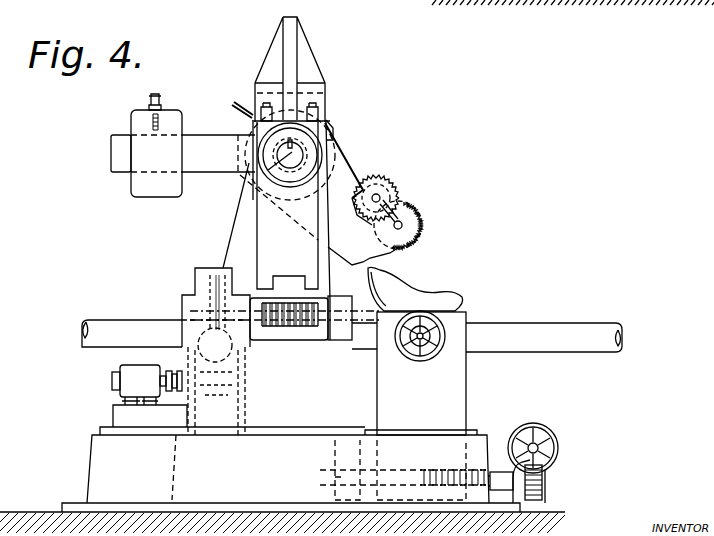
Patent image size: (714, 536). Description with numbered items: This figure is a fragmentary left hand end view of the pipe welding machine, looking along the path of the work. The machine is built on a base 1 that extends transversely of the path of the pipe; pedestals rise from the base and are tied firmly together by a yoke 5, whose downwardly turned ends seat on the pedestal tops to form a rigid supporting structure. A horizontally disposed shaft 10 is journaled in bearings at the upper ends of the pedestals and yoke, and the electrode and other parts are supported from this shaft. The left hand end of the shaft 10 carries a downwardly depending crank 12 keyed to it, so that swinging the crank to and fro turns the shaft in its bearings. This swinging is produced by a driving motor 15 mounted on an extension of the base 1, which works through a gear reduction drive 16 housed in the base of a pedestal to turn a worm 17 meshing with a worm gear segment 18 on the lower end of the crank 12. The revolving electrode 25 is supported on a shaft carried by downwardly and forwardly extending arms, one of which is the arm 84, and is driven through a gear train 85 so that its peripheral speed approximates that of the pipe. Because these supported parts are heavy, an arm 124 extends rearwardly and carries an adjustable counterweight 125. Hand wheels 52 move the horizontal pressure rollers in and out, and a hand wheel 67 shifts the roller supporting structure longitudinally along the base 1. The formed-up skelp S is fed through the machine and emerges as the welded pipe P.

The base 1 is at (282, 469).
The yoke 5 is at (282, 19).
The shaft 10 is at (278, 177).
The crank 12 is at (285, 230).
The driving motor 15 is at (147, 385).
The gear reduction drive 16 is at (205, 292).
The worm 17 is at (295, 299).
The worm gear segment 18 is at (244, 280).
The revolving electrode 25 is at (420, 296).
The hand wheel 52 is at (420, 362).
The hand wheel 67 is at (556, 446).
The arm 84 is at (373, 194).
The gear train 85 is at (400, 200).
The arm 124 is at (218, 153).
The counterweight 125 is at (140, 152).
The welded pipe P is at (122, 322).
The formed-up skelp S is at (534, 330).